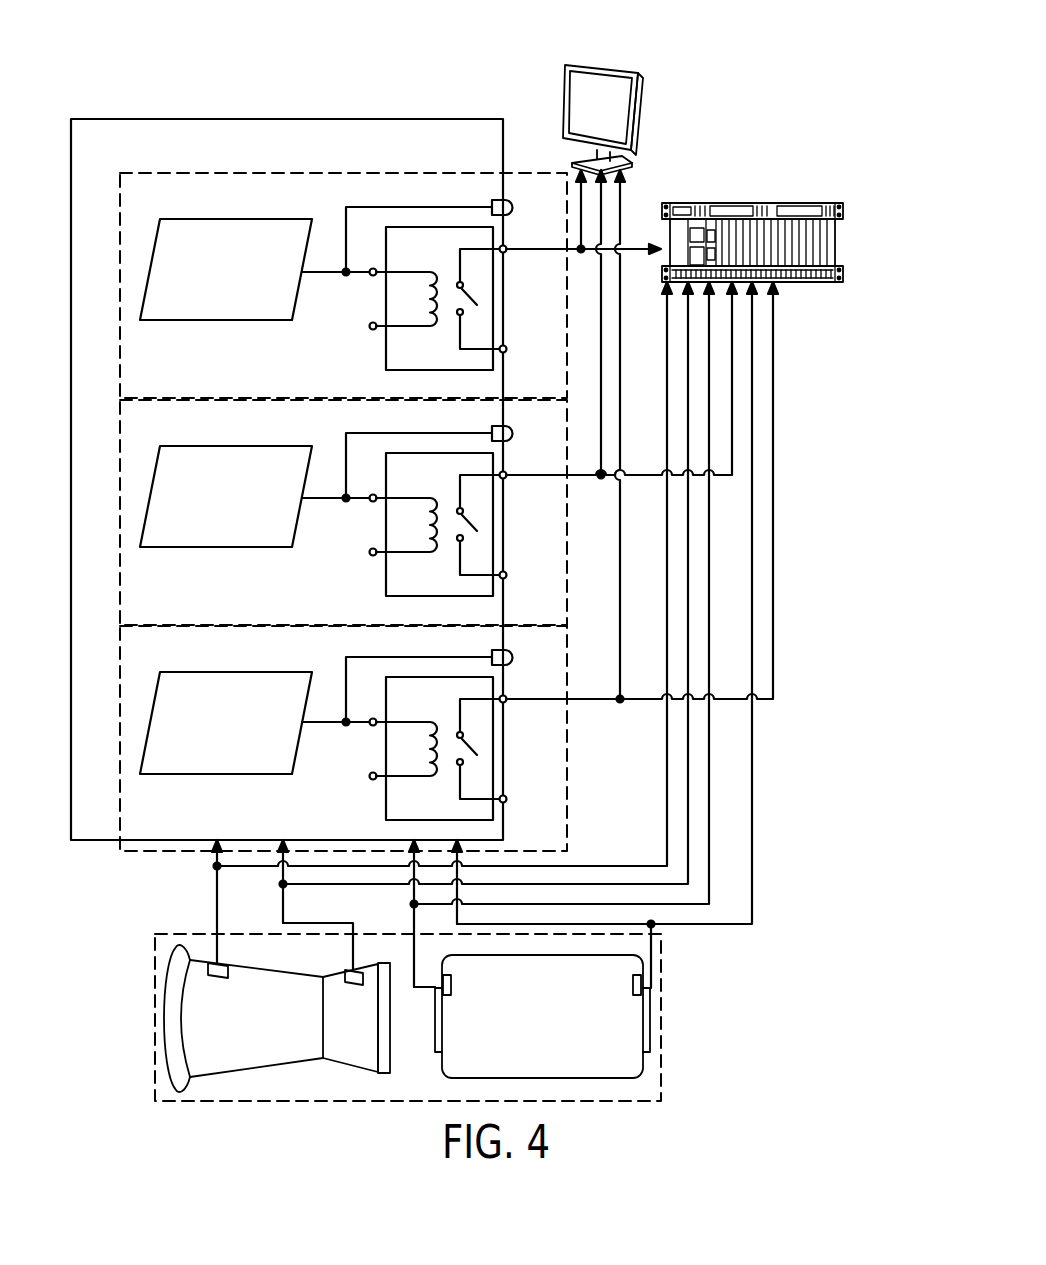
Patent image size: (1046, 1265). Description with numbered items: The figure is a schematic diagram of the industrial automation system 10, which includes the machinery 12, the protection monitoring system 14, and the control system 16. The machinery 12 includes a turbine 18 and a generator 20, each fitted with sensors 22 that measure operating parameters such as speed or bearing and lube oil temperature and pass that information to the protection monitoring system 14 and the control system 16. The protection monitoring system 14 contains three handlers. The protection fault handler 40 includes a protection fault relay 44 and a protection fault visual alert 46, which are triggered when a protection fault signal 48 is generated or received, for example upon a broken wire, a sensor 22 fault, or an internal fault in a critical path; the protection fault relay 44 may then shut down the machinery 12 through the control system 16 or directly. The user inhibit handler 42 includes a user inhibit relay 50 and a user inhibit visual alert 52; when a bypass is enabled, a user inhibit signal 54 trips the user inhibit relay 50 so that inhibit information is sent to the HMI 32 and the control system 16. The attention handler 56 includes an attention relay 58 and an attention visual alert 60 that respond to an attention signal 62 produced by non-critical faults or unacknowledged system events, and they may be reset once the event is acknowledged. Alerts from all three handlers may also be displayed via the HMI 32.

The industrial automation system 10 is at (748, 36).
The machinery 12 is at (155, 1020).
The protection monitoring system 14 is at (285, 119).
The control system 16 is at (844, 211).
The turbine 18 is at (258, 1071).
The generator 20 is at (443, 1077).
The sensors 22 is at (342, 973).
The HMI 32 is at (605, 70).
The protection fault handler 40 is at (120, 285).
The user inhibit handler 42 is at (120, 511).
The protection fault relay 44 is at (385, 347).
The protection fault visual alert 46 is at (512, 202).
The protection fault signal 48 is at (234, 219).
The user inhibit relay 50 is at (404, 515).
The user inhibit visual alert 52 is at (523, 449).
The user inhibit signal 54 is at (234, 446).
The attention handler 56 is at (120, 737).
The attention relay 58 is at (404, 739).
The attention visual alert 60 is at (523, 673).
The attention signal 62 is at (234, 672).